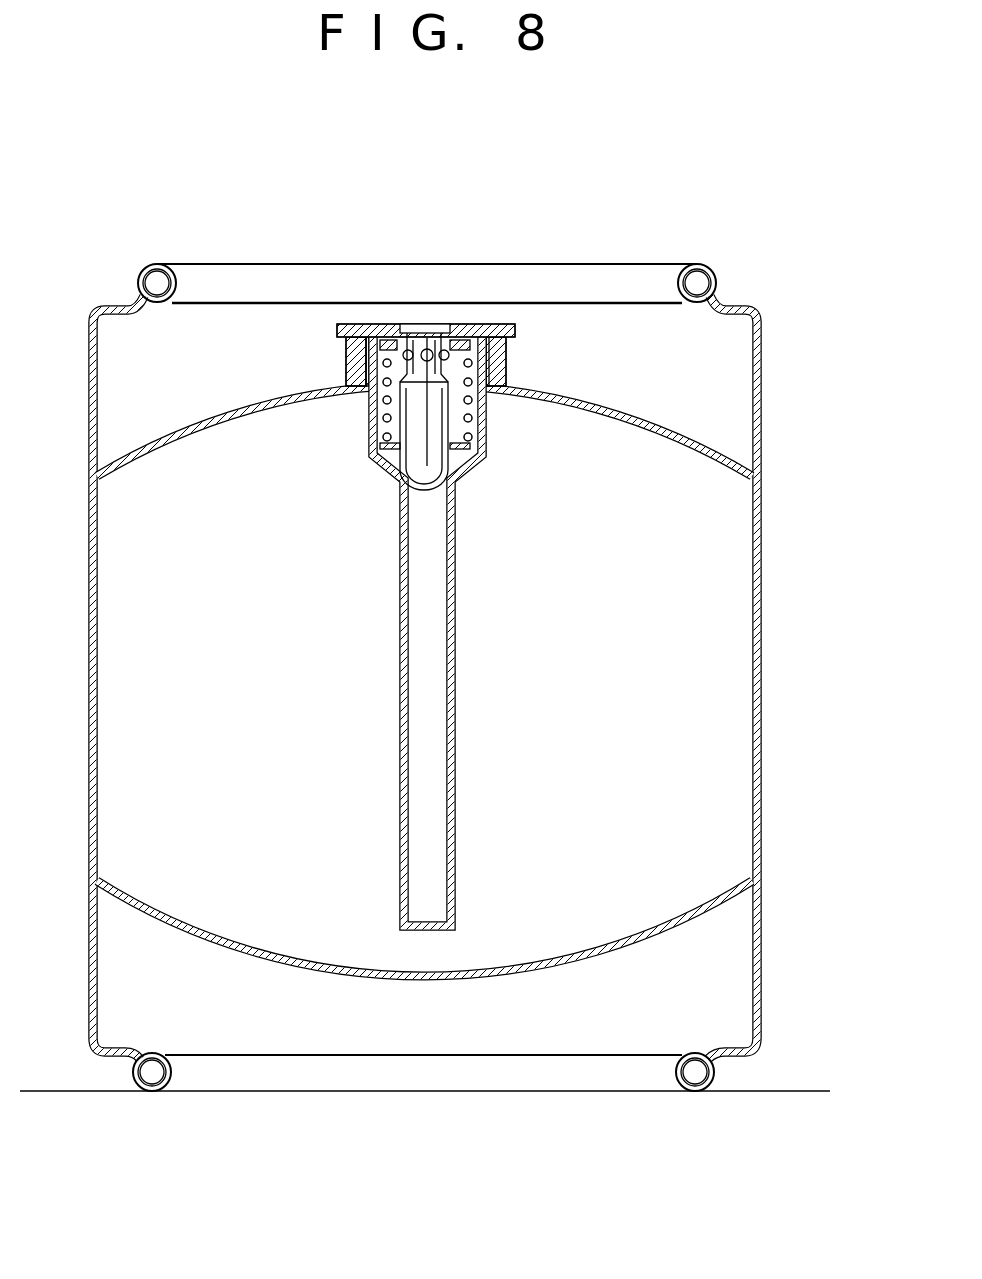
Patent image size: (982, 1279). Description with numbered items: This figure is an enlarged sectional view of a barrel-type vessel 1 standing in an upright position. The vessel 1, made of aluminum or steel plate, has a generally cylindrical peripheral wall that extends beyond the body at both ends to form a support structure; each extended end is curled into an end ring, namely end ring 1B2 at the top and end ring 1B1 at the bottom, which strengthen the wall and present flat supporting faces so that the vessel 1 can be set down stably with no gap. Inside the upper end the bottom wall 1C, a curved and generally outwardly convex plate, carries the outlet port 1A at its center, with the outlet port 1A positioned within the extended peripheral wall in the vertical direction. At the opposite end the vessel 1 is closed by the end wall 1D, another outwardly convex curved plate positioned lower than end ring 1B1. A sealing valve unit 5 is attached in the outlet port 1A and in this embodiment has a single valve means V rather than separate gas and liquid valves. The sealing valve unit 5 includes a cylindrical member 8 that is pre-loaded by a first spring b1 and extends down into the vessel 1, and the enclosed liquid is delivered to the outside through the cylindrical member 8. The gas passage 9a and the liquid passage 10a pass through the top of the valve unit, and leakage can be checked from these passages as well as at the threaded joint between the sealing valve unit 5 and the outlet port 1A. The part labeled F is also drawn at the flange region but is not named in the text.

The vessel 1 is at (762, 600).
The outlet port 1A is at (507, 357).
The end ring 1B1 is at (710, 1083).
The end ring 1B2 is at (688, 267).
The bottom wall 1C is at (660, 425).
The end wall 1D is at (680, 935).
The sealing valve unit 5 is at (330, 362).
The cylindrical member 8 is at (463, 477).
The gas passage 9a is at (380, 330).
The liquid passage 10a is at (402, 326).
The flange F is at (398, 324).
The single valve means V is at (453, 325).
The first spring b1 is at (468, 420).